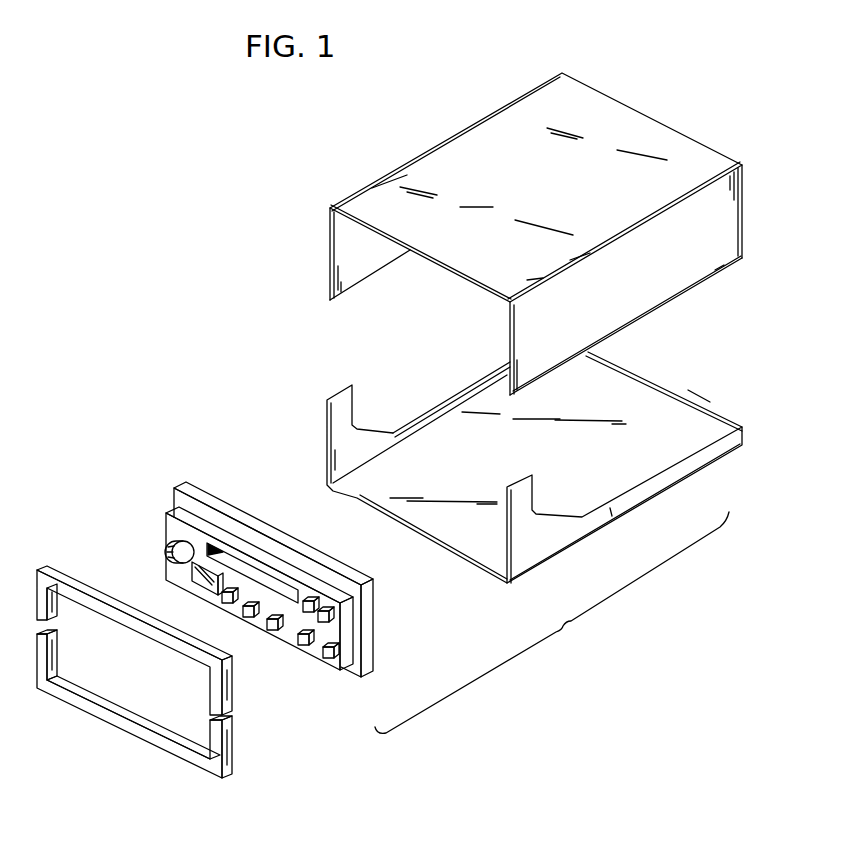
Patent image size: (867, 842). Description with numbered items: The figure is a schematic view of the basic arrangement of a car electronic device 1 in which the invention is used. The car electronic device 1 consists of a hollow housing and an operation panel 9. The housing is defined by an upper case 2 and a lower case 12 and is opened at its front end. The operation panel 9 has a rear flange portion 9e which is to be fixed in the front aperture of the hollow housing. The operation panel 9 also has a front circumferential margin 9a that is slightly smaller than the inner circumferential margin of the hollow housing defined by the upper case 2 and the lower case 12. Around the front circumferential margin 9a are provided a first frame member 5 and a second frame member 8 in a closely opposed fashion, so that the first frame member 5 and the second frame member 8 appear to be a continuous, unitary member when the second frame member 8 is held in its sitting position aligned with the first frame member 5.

The car electronic device 1 is at (581, 658).
The upper case 2 is at (605, 86).
The first frame member 5 is at (87, 575).
The second frame member 8 is at (123, 746).
The operation panel 9 is at (174, 470).
The front circumferential margin 9a is at (360, 670).
The rear flange portion 9e is at (283, 544).
The lower case 12 is at (664, 432).